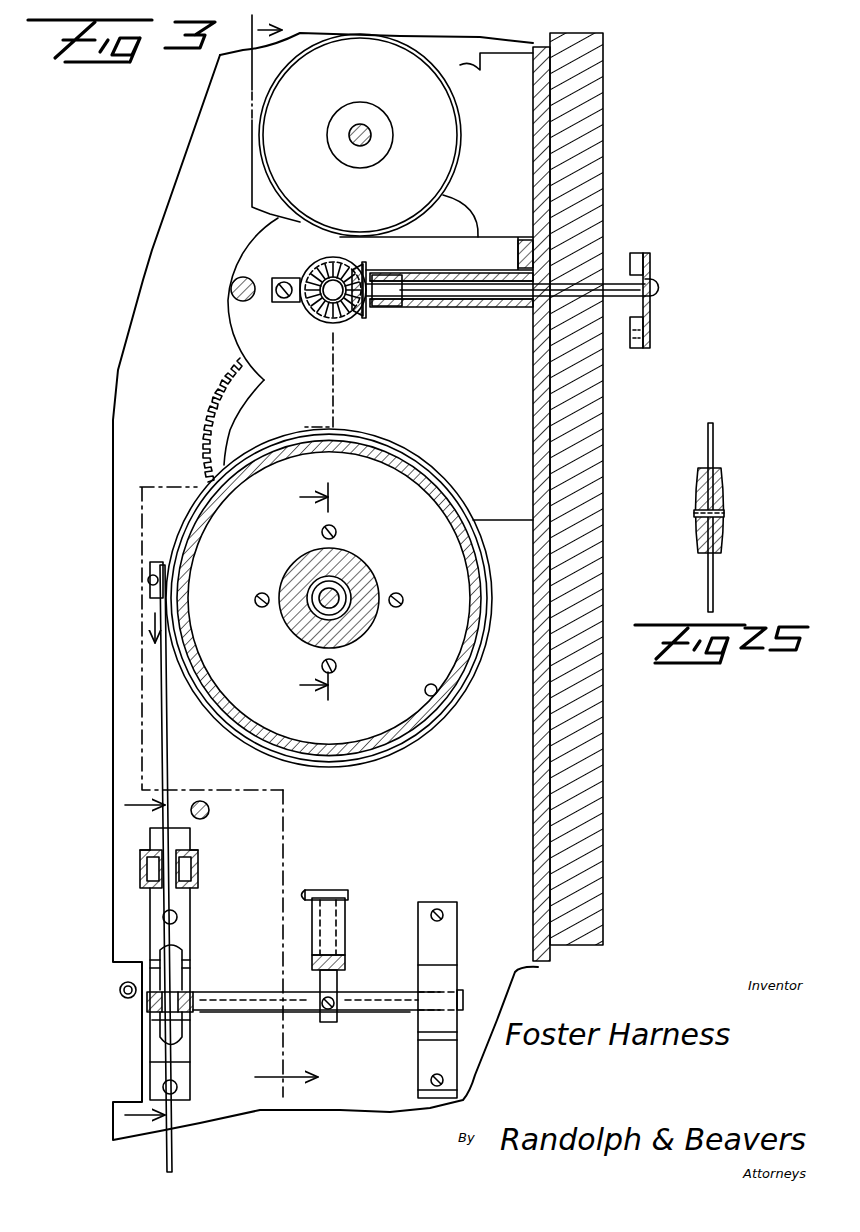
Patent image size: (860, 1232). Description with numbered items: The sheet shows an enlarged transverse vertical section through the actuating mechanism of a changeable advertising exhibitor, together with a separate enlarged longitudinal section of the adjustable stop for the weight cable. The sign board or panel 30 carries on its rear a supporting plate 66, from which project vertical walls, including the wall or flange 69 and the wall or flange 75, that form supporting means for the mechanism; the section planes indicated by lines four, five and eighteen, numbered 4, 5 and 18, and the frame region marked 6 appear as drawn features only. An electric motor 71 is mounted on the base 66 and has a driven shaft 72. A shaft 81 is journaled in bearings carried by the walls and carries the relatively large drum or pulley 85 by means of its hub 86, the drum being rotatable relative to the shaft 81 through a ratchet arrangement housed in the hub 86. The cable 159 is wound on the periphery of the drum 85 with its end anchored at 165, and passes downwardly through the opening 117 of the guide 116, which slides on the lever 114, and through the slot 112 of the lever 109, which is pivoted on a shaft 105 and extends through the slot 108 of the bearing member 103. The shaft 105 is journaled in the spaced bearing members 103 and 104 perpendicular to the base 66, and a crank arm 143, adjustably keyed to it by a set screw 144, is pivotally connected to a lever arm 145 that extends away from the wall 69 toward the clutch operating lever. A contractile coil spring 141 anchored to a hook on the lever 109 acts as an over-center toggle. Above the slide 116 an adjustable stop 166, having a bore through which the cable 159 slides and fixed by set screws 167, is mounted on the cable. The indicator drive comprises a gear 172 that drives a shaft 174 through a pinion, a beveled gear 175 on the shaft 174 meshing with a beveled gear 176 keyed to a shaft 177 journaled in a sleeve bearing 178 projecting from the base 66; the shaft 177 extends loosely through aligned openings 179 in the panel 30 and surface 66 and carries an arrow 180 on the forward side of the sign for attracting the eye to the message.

In FIG. 3, the section line 4- 4 is at (269, 557).
In FIG. 3, the section line 5- 5 is at (140, 960).
In FIG. 3, the frame 6 is at (325, 577).
In FIG. 3, the section line 18- 18 is at (290, 591).
In FIG. 3, the sign or billboard panel 30 is at (606, 405).
In FIG. 3, the supporting plate 66 is at (535, 404).
In FIG. 3, the wall or flange 69 is at (329, 611).
In FIG. 3, the electric motor 71 is at (360, 135).
In FIG. 3, the driven shaft 72 is at (364, 124).
In FIG. 3, the wall or flange 75 is at (374, 405).
In FIG. 3, the shaft 81 is at (335, 594).
In FIG. 3, the drum or pulley 85 is at (356, 758).
In FIG. 3, the hub 86 is at (360, 645).
In FIG. 3, the bearing member 103 is at (192, 965).
In FIG. 3, the bearing member 104 is at (450, 930).
In FIG. 3, the shaft 105 is at (395, 1022).
In FIG. 3, the slot 108 is at (186, 952).
In FIG. 3, the lever 109 is at (196, 1000).
In FIG. 3, the slot 112 is at (142, 1000).
In FIG. 3, the lever 114 is at (189, 868).
In FIG. 3, the guide 116 is at (200, 850).
In FIG. 3, the opening 117 is at (150, 848).
In FIG. 3, the contractile coil spring 141 is at (118, 990).
In FIG. 3, the crank arm 143 is at (340, 972).
In FIG. 3, the set screw 144 is at (326, 1026).
In FIG. 3, the lever arm 145 is at (345, 905).
In FIG. 3, the cable 159 is at (175, 778).
In FIG. 25, the cable 159 is at (705, 441).
In FIG. 3, the cable anchor 165 is at (432, 694).
In FIG. 3, the adjustable stop 166 is at (150, 590).
In FIG. 25, the adjustable stop 166 is at (722, 470).
In FIG. 25, the set screws 167 is at (726, 514).
In FIG. 3, the gear 172 is at (203, 421).
In FIG. 3, the shaft 174 is at (322, 322).
In FIG. 3, the beveled gear 175 is at (340, 324).
In FIG. 3, the beveled gear 176 is at (368, 270).
In FIG. 3, the shaft 177 is at (475, 300).
In FIG. 3, the sleeve bearing 178 is at (418, 312).
In FIG. 3, the aligned openings 179 is at (583, 270).
In FIG. 3, the arrow or indicator 180 is at (652, 342).